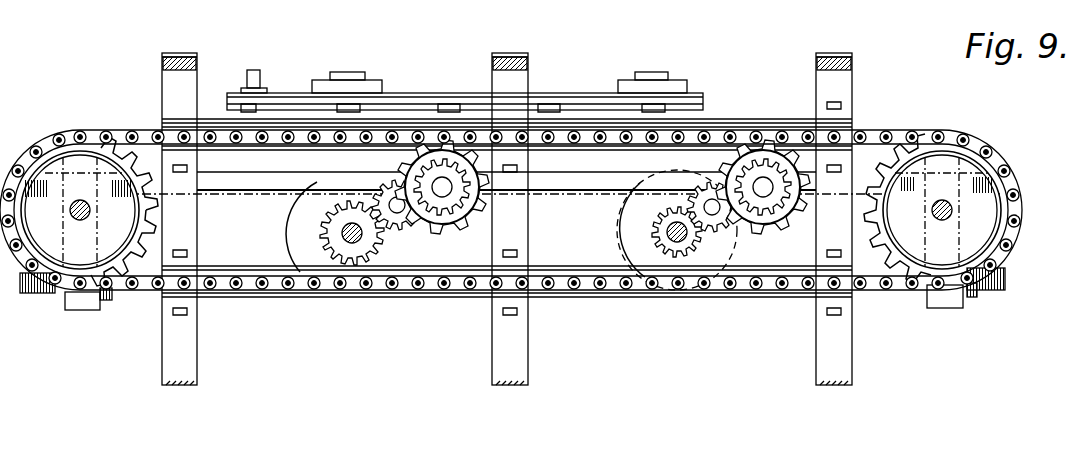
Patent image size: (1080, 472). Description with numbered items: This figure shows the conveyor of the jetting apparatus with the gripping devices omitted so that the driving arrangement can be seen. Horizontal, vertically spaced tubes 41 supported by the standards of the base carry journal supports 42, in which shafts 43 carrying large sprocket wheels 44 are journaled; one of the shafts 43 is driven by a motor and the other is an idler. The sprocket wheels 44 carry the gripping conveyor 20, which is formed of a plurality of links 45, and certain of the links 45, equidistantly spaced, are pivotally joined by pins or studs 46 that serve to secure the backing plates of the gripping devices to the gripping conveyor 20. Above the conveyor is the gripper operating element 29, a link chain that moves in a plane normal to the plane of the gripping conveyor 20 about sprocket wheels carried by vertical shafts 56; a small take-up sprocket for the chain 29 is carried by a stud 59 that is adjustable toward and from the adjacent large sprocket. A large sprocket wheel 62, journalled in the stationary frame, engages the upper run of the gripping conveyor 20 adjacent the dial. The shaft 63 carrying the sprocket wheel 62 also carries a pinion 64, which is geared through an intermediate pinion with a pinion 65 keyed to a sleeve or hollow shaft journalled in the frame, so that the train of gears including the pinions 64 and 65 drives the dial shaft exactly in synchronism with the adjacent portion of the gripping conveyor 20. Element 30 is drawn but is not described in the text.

The gripping conveyor 20 is at (722, 128).
The gripper operating element 29 is at (578, 92).
The rail bracket 30 is at (548, 104).
The tubes 41 is at (252, 182).
The journal supports 42 is at (77, 239).
The shafts 43 is at (70, 213).
The large sprocket wheels 44 is at (130, 158).
The links 45 is at (511, 183).
The pins or studs 46 is at (882, 137).
The vertical shafts 56 is at (360, 74).
The stud 59 is at (258, 75).
The large sprocket wheel 62 is at (786, 143).
The shaft 63 is at (764, 180).
The pinion 64 is at (617, 231).
The pinion 65 is at (668, 258).